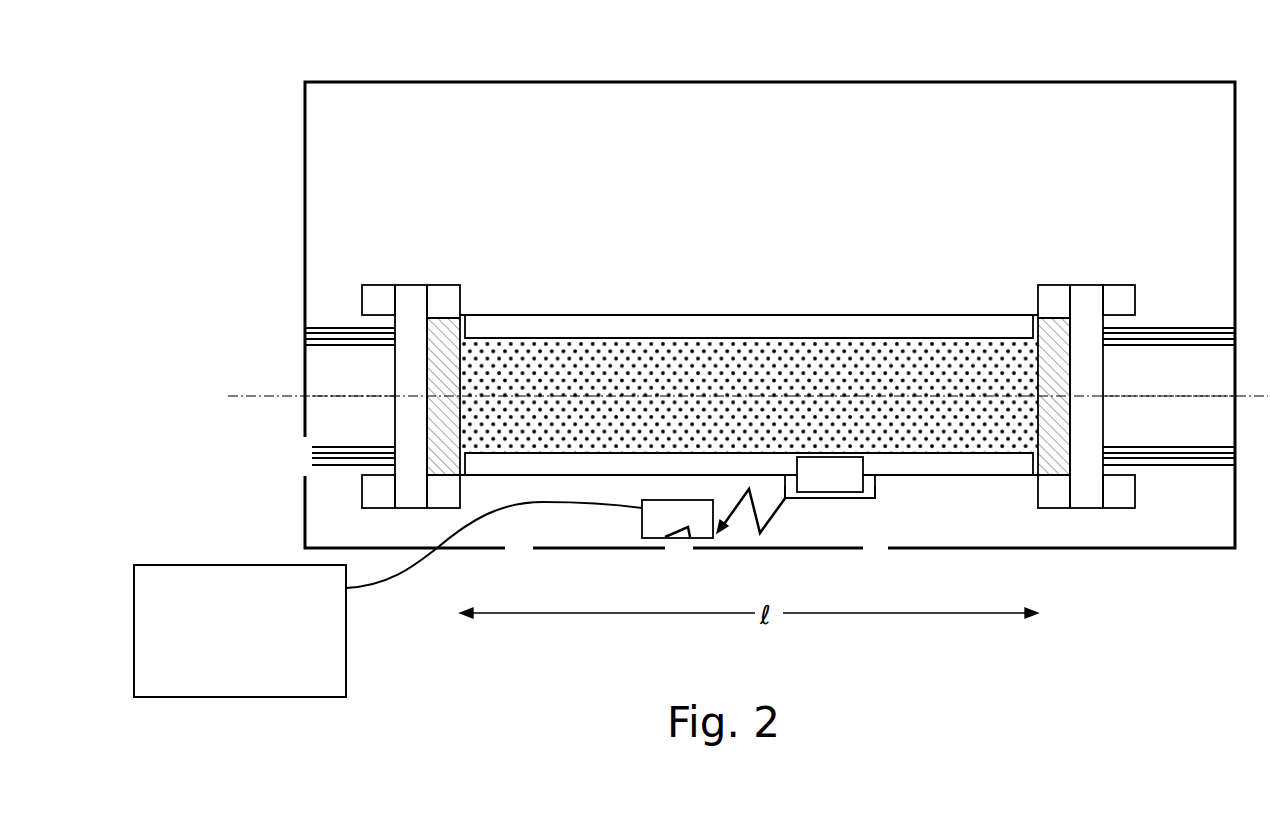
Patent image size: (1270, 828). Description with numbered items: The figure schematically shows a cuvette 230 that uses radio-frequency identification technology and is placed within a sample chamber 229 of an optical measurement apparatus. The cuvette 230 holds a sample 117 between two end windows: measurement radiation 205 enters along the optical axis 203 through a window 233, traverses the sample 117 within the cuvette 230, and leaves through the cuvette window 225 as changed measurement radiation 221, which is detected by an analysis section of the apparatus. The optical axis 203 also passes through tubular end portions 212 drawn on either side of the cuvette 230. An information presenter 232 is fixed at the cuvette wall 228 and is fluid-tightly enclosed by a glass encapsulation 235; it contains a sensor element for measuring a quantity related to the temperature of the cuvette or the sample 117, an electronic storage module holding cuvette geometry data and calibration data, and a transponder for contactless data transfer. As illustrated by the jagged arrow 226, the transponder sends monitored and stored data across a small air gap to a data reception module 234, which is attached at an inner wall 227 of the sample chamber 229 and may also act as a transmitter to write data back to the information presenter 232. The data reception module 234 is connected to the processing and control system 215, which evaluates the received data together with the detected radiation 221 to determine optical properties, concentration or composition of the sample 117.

The sample 117 is at (628, 405).
The optical axis 203 is at (255, 393).
The measurement radiation 205 is at (356, 402).
The pipe 212 is at (313, 330).
The processing and control system 215 is at (346, 655).
The changed measurement radiation 221 is at (1158, 404).
The cuvette window 225 is at (1032, 366).
The jagged arrow 226 is at (782, 517).
The inner wall 227 is at (803, 548).
The cuvette wall 228 is at (777, 328).
The sample chamber 229 is at (880, 82).
The cuvette 230 is at (887, 228).
The information presenter 232 is at (868, 463).
The window 233 is at (465, 356).
The data reception module 234 is at (703, 540).
The glass encapsulation 235 is at (872, 492).